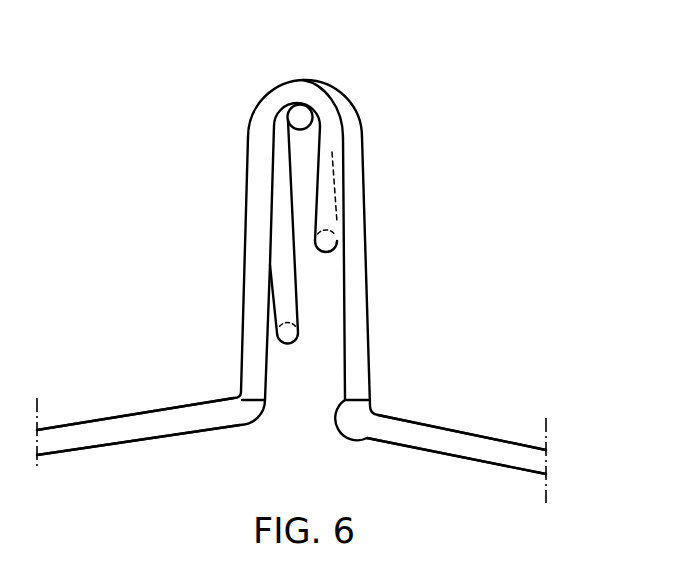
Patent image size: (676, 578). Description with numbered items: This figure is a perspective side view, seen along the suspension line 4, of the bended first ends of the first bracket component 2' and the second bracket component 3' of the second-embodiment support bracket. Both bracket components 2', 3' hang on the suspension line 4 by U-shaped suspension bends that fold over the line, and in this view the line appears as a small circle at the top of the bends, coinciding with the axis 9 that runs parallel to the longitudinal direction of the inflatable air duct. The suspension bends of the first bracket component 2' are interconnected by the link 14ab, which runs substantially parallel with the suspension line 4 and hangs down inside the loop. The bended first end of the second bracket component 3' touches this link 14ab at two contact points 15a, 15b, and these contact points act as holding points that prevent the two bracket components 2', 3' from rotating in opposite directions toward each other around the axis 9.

The first bracket component 2' is at (138, 378).
The second bracket component 3' is at (456, 395).
The suspension line 4 is at (295, 73).
The axis 9 is at (299, 113).
The link 14ab is at (318, 228).
The contact point 15a is at (437, 189).
The contact point 15b is at (337, 242).